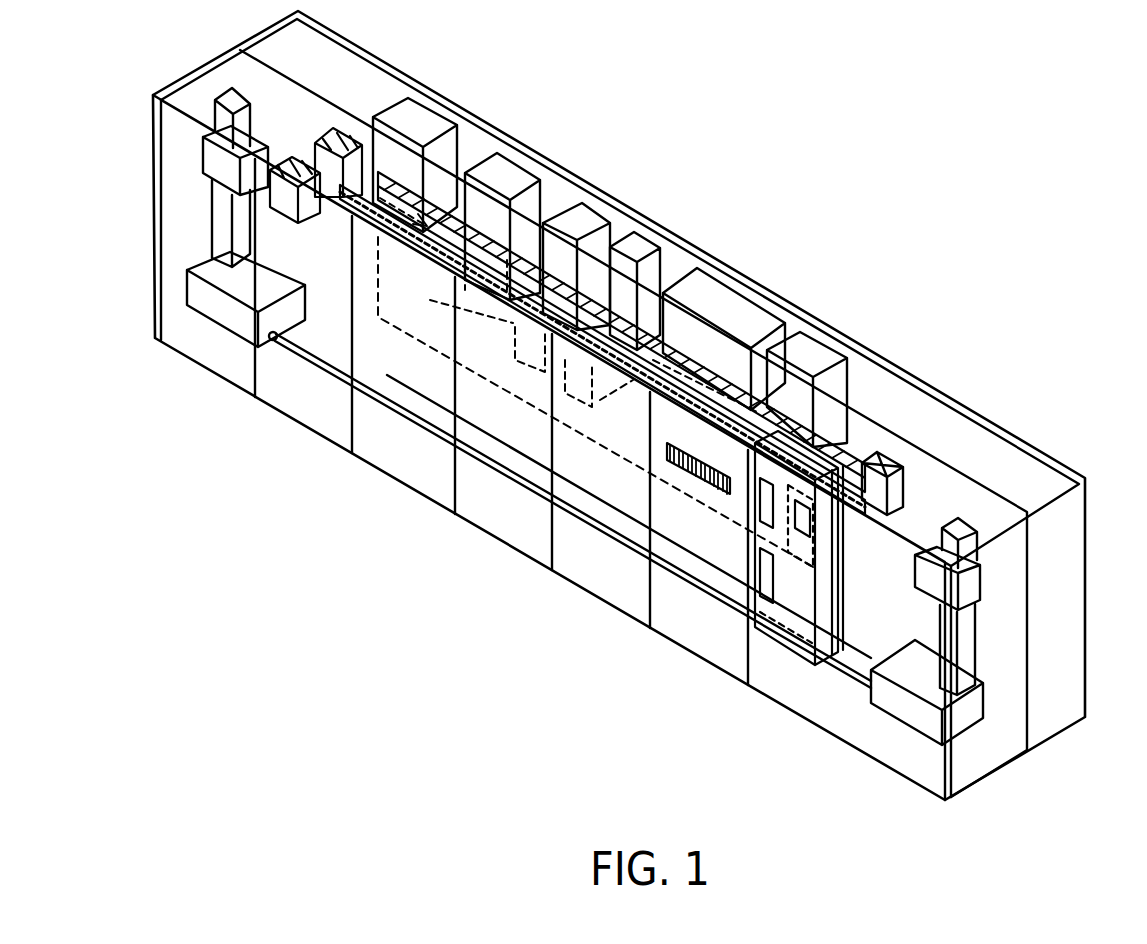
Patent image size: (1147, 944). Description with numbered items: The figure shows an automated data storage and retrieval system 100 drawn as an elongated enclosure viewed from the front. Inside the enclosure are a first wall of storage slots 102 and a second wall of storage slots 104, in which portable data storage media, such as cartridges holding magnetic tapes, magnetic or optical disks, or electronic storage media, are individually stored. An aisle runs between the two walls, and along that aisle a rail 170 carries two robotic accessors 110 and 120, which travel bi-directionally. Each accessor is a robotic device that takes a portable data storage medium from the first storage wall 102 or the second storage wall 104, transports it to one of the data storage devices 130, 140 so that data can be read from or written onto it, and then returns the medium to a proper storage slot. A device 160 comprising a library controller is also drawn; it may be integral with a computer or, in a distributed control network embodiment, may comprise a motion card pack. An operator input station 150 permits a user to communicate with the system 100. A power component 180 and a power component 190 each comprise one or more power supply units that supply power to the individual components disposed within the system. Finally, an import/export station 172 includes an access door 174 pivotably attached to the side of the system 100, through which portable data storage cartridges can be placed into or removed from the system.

The automated data storage and retrieval system 100 is at (678, 702).
The first wall of storage slots 102 is at (433, 193).
The second wall of storage slots 104 is at (387, 378).
The accessor 110 is at (210, 160).
The accessor 120 is at (985, 586).
The data storage device 130 is at (604, 214).
The data storage device 140 is at (649, 247).
The operator input station 150 is at (531, 178).
The library controller 160 is at (445, 130).
The rail 170 is at (492, 460).
The import/export station 172 is at (816, 655).
The access door 174 is at (780, 635).
The power component 180 is at (877, 462).
The power component 190 is at (862, 535).